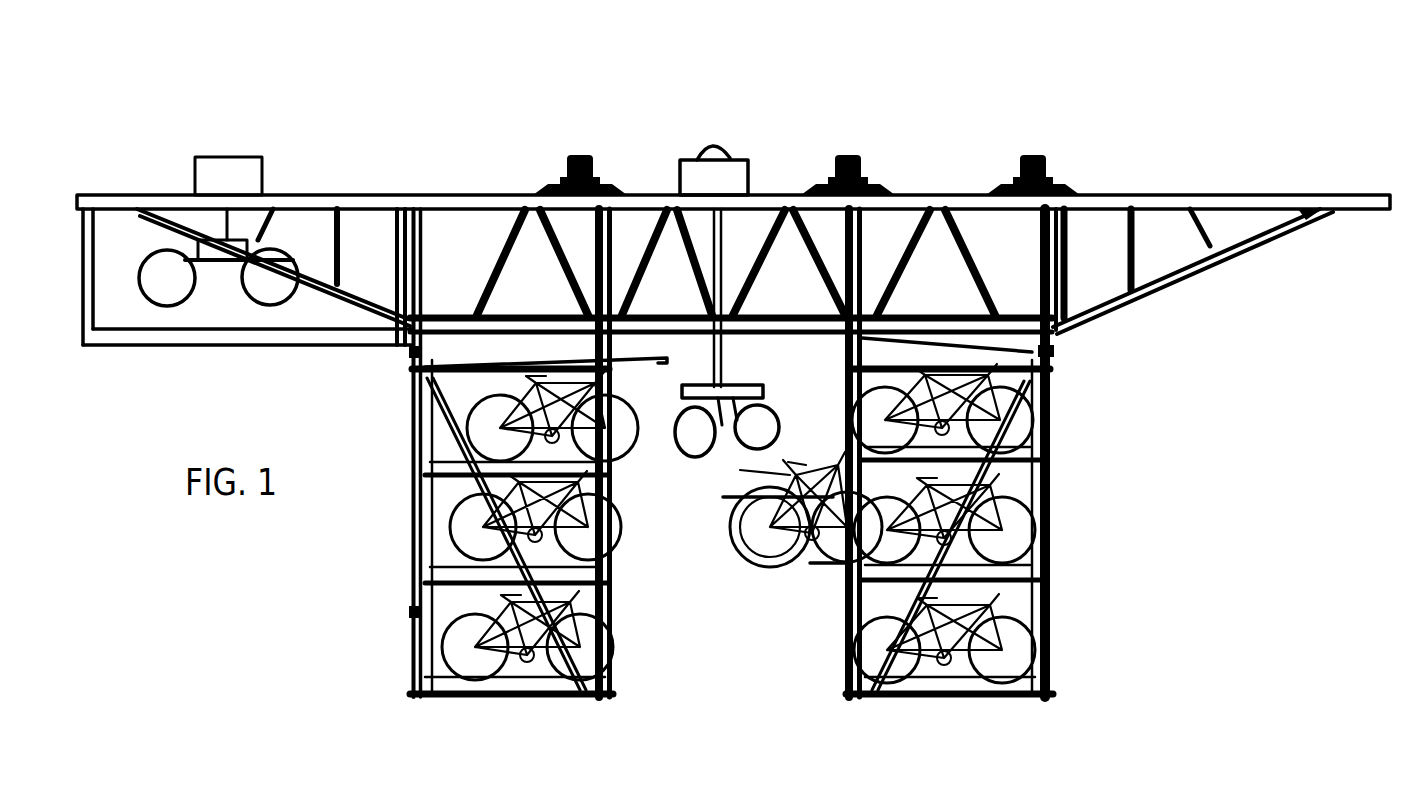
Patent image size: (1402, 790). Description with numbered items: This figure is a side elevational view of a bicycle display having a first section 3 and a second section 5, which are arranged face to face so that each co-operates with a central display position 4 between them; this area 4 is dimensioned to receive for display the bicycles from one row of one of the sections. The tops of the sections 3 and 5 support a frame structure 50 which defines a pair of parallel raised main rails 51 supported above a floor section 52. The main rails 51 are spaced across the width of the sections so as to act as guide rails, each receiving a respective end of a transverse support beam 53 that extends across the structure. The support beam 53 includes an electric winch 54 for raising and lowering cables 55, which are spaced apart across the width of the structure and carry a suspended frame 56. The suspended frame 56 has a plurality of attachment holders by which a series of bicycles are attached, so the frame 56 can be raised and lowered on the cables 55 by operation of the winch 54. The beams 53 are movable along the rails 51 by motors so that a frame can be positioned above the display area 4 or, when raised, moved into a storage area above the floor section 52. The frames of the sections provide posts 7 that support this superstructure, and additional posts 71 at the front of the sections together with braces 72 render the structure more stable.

The first section 3 is at (388, 500).
The central display position 4 is at (740, 622).
The second section 5 is at (1098, 464).
The posts 7 is at (410, 576).
The frame structure 50 is at (400, 173).
The main rails 51 is at (648, 193).
The floor section 52 is at (247, 331).
The support beam 53 is at (692, 176).
The winch 54 is at (727, 150).
The cables 55 is at (722, 342).
The suspended frame 56 is at (740, 386).
The additional posts 71 is at (615, 613).
The braces 72 is at (563, 700).